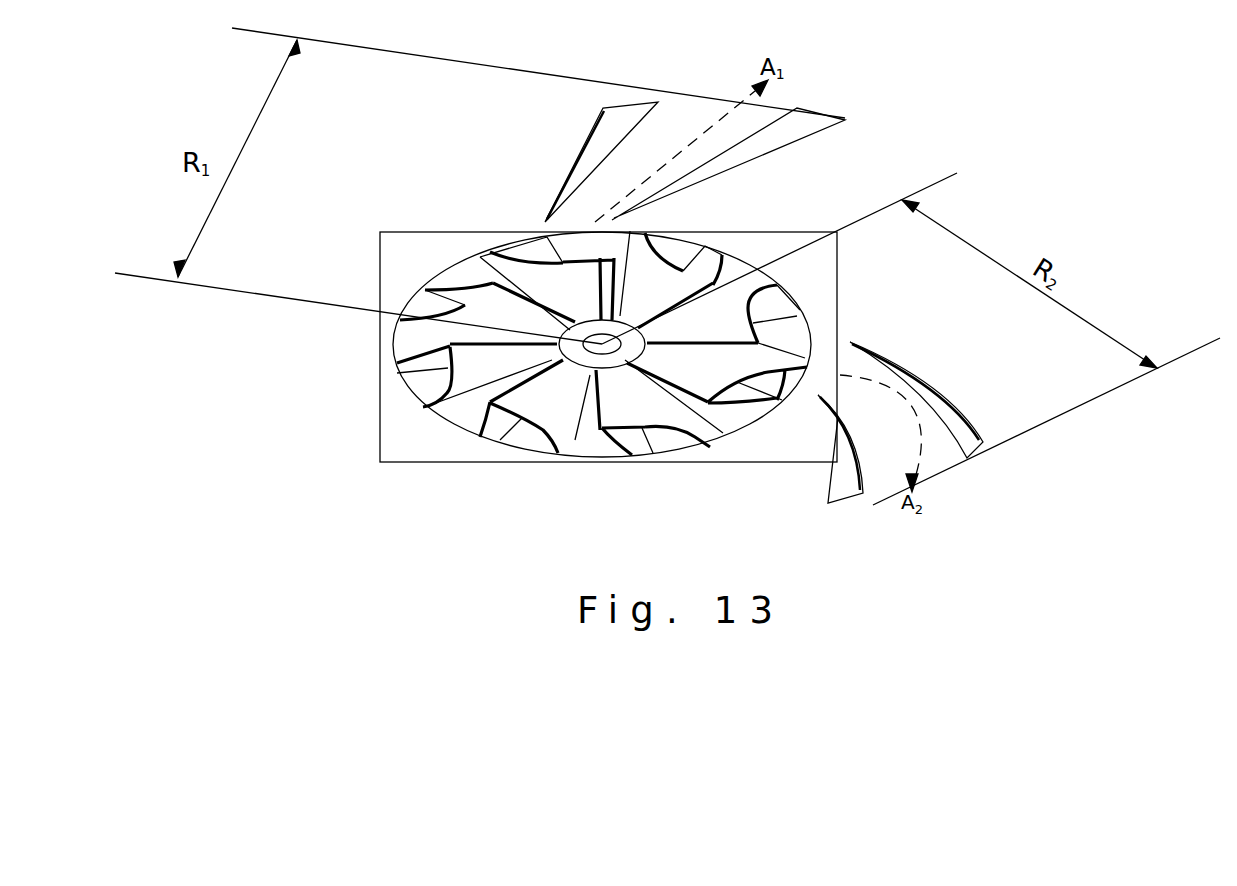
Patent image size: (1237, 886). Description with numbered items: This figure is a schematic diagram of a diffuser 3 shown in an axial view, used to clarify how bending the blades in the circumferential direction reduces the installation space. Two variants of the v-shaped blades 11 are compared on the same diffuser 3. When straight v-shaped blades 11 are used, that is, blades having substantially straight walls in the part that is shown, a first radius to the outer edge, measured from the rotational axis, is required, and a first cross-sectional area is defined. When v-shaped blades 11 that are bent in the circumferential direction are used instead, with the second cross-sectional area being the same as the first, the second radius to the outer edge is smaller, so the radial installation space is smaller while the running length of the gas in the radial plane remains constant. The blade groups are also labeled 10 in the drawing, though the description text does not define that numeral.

The diffuser 3 is at (523, 445).
The blade row (rotor blades) 10 is at (672, 150).
The v-shaped blades 11 is at (620, 117).